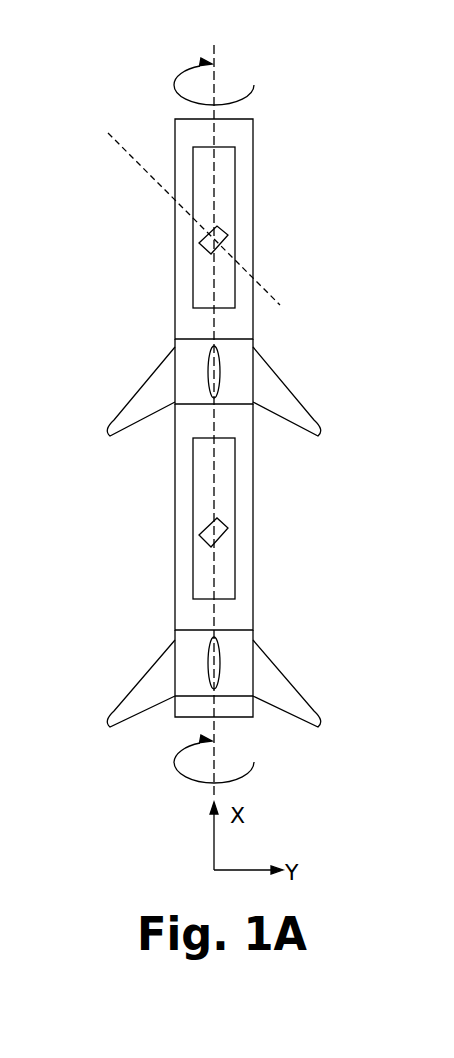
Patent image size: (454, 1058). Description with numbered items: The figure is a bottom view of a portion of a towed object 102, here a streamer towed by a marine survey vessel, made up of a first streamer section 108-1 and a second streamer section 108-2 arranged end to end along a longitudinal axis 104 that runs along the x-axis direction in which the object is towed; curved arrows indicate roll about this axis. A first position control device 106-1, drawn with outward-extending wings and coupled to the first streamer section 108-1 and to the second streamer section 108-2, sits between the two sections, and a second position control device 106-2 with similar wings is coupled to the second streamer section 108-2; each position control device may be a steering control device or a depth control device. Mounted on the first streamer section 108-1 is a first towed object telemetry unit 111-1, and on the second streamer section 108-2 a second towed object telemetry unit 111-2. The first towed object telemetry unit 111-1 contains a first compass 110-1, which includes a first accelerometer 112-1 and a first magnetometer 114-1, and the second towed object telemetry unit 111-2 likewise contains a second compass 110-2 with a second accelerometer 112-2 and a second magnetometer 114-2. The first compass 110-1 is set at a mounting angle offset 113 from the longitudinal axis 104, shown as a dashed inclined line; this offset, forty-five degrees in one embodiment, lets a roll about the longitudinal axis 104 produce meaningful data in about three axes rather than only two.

The towed object 102 is at (207, 383).
The longitudinal axis 104 is at (216, 55).
The first position control device 106-1 is at (233, 348).
The second position control device 106-2 is at (233, 645).
The first streamer section 108-1 is at (254, 133).
The second streamer section 108-2 is at (254, 465).
The first compass 110-1 is at (186, 228).
The second compass 110-2 is at (201, 514).
The first towed object telemetry unit 111-1 is at (204, 157).
The second towed object telemetry unit 111-2 is at (236, 495).
The first accelerometer 112-1 is at (199, 246).
The second accelerometer 112-2 is at (201, 543).
The mounting angle offset 113 is at (168, 172).
The first magnetometer 114-1 is at (228, 235).
The second magnetometer 114-2 is at (228, 528).